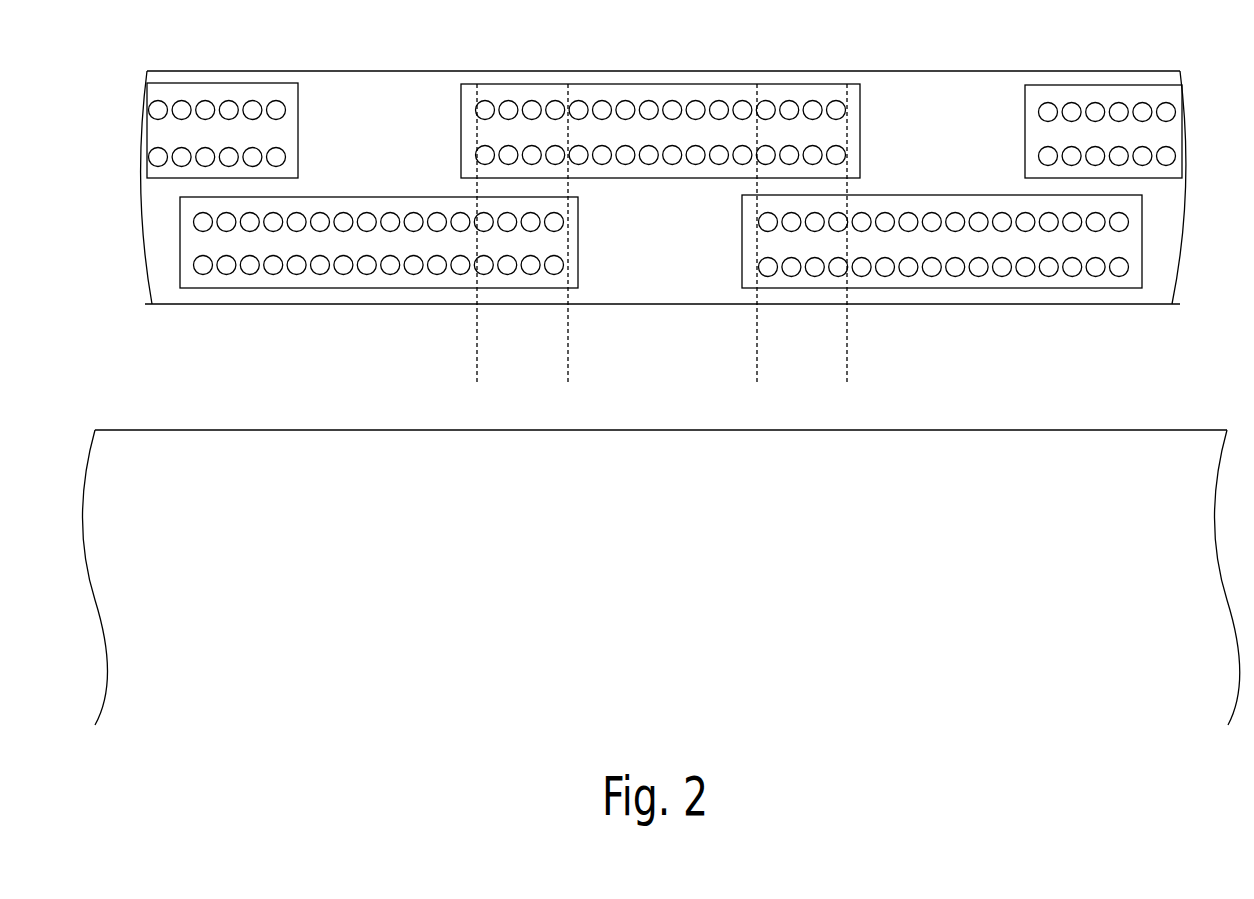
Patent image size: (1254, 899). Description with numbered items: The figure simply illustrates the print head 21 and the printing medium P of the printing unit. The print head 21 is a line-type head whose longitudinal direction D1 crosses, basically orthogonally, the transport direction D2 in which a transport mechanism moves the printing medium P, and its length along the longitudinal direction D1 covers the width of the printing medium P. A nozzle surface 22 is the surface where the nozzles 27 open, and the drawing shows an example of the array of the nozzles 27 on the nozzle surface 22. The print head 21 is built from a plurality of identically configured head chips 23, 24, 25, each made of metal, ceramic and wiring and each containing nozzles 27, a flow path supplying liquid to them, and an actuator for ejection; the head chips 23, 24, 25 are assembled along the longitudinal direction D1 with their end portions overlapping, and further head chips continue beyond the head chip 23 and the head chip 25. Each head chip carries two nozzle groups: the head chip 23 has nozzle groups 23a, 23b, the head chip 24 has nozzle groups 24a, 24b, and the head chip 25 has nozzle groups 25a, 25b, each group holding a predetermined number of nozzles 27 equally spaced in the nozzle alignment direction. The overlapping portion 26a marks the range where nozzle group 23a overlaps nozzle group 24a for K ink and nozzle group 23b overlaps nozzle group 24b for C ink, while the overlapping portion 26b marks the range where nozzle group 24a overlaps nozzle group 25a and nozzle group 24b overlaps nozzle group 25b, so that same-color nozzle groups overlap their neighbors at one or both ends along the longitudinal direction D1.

The print head 21 is at (1067, 72).
The nozzle surface 22 is at (905, 87).
The head chip 23 is at (325, 275).
The nozzle group 23a is at (180, 222).
The nozzle group 23b is at (180, 265).
The head chip 24 is at (607, 114).
The nozzle group 24a is at (461, 110).
The nozzle group 24b is at (461, 155).
The head chip 25 is at (889, 275).
The nozzle group 25a is at (742, 222).
The nozzle group 25b is at (742, 267).
The overlapping portion 26a is at (568, 362).
The overlapping portion 26b is at (847, 362).
The nozzles 27 is at (323, 274).
The longitudinal direction D1 is at (708, 38).
The transport direction D2 is at (663, 345).
The printing medium P is at (1002, 442).